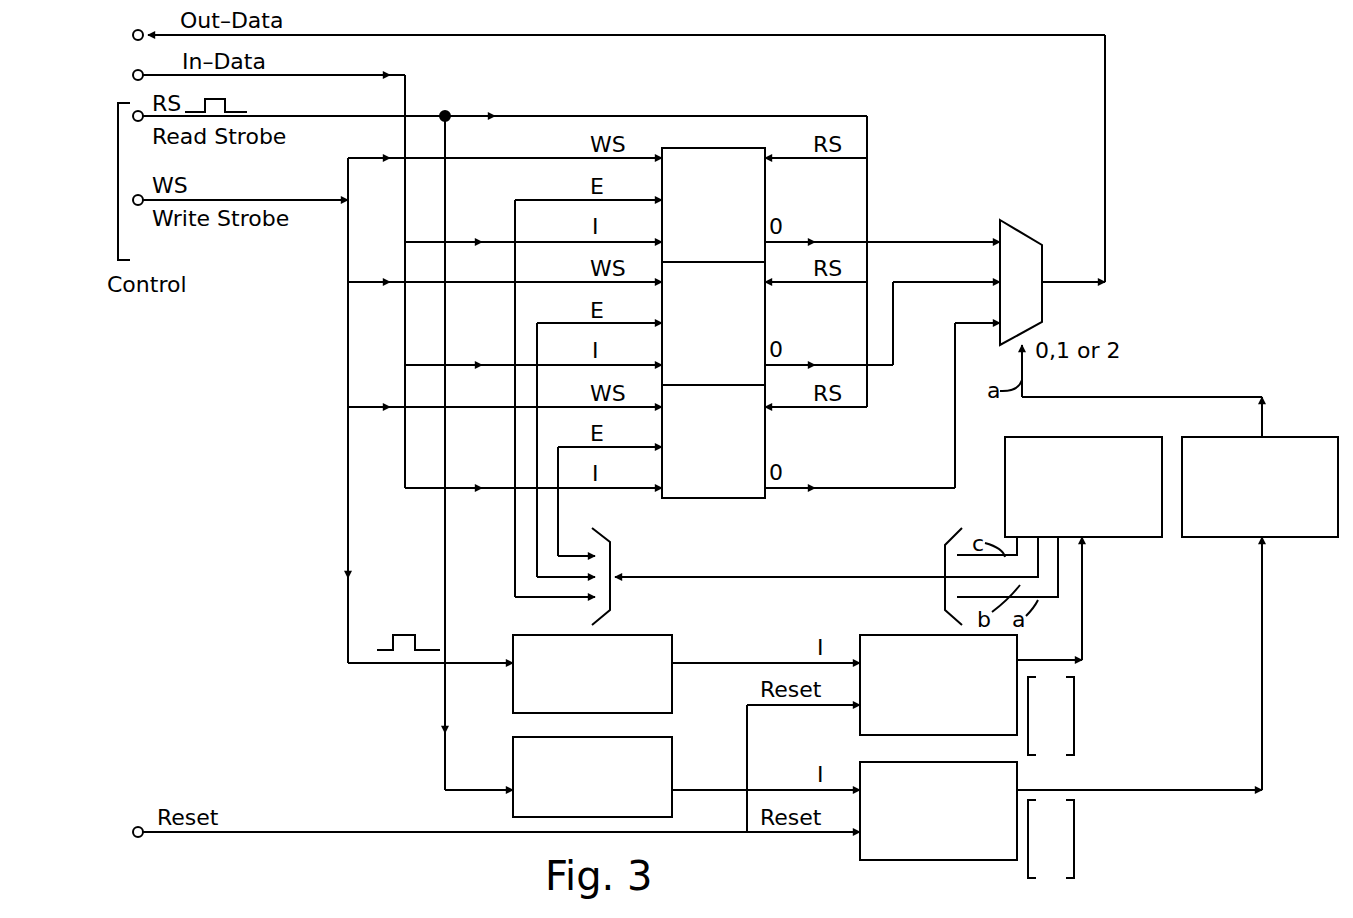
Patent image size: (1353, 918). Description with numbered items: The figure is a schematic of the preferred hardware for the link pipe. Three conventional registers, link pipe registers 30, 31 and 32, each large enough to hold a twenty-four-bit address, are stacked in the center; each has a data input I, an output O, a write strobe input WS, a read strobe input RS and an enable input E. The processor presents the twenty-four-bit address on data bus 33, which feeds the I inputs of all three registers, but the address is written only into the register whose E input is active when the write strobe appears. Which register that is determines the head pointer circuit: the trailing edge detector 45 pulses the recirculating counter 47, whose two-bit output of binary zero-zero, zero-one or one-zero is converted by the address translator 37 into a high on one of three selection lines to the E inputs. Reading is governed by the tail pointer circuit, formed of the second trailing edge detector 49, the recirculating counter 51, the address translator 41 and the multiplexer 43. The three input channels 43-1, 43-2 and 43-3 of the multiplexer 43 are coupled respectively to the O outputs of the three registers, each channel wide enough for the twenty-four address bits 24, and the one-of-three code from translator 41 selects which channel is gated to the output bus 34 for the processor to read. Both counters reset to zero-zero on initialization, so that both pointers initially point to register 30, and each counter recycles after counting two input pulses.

The address bits 24 is at (333, 25).
The data bus 33 is at (292, 78).
The output bus 34 is at (420, 35).
The link pipe register 30 is at (713, 205).
The link pipe register 31 is at (713, 323).
The link pipe register 32 is at (713, 441).
The multiplexer 43 is at (1004, 232).
The input channel 43-1 is at (882, 227).
The input channel 43-2 is at (882, 309).
The input channel 43-3 is at (882, 391).
The address translator 37 is at (1018, 450).
The address translator 41 is at (1194, 450).
The trailing edge detector 45 is at (645, 647).
The recirculating counter 47 is at (971, 646).
The trailing edge detector 49 is at (668, 752).
The recirculating counter 51 is at (1061, 707).